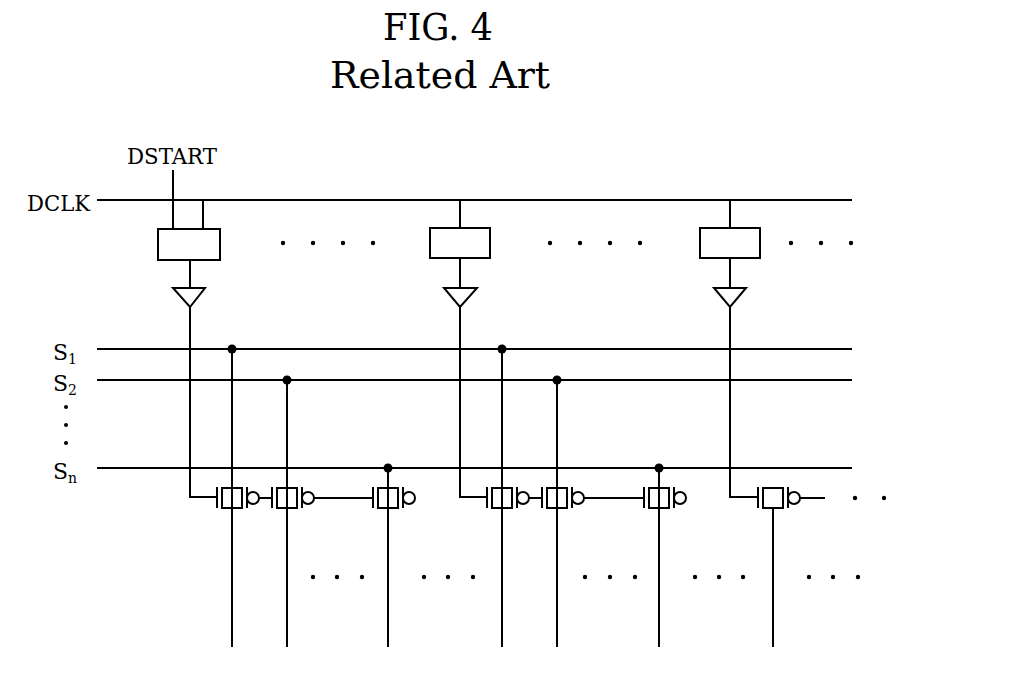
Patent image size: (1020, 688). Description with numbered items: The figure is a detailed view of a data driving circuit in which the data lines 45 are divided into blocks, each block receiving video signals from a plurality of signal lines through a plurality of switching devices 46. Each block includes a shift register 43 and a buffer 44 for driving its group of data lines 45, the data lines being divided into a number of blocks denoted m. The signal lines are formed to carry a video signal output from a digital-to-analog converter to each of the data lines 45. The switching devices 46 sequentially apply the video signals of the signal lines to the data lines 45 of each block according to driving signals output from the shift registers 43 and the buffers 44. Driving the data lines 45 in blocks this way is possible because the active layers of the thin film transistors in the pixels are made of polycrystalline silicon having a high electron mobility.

The shift register 43 is at (165, 246).
The buffer 44 is at (176, 303).
The data line 45 is at (231, 616).
The switching device 46 is at (228, 510).